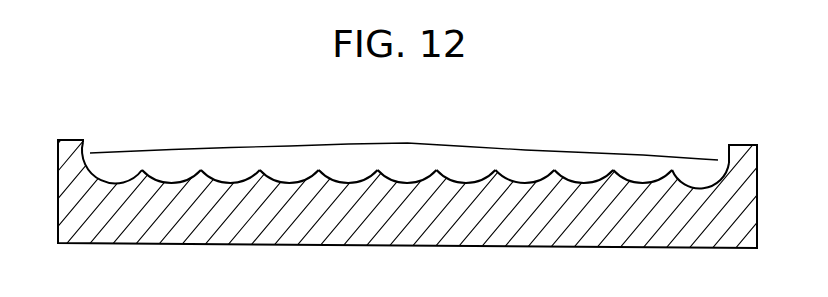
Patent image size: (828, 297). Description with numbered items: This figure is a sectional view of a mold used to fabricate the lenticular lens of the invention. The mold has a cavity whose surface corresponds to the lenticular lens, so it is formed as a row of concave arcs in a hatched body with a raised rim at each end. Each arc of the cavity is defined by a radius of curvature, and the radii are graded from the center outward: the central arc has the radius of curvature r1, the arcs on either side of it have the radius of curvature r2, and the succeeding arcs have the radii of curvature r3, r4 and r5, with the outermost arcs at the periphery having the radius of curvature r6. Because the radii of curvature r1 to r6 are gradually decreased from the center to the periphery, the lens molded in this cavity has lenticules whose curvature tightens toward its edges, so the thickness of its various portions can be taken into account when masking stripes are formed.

The radius of curvature r1 is at (392, 180).
The radius of curvature r2 is at (466, 146).
The radius of curvature r3 is at (525, 150).
The radius of curvature r4 is at (584, 152).
The radius of curvature r5 is at (643, 155).
The radius of curvature r6 is at (702, 159).